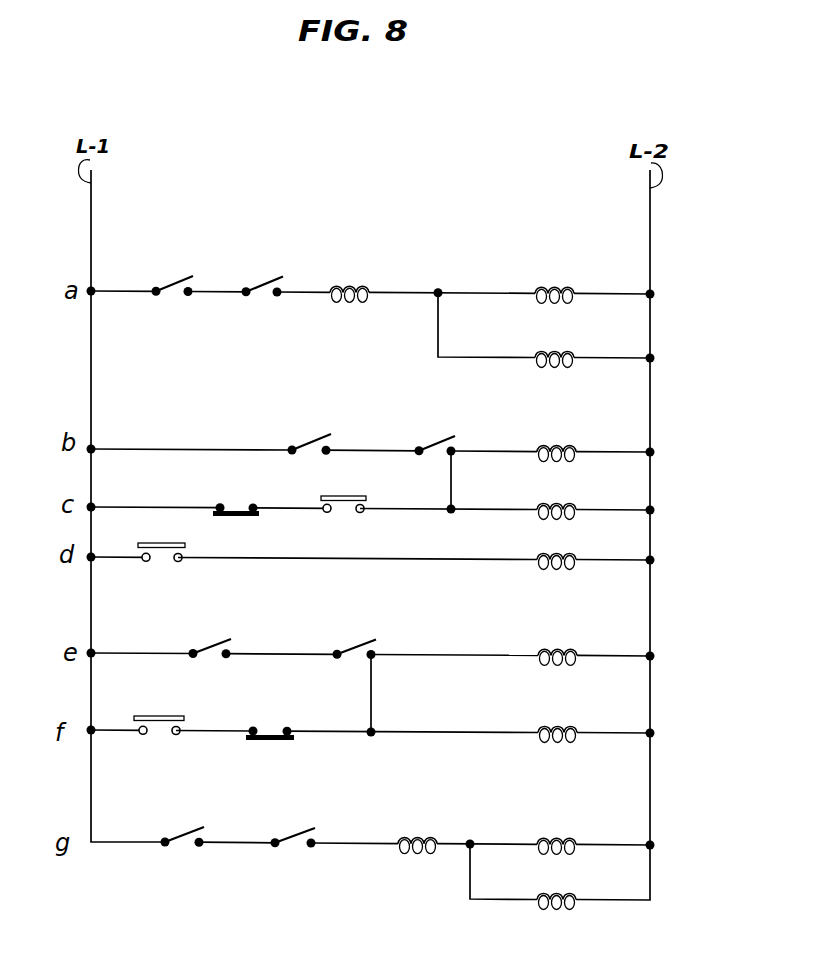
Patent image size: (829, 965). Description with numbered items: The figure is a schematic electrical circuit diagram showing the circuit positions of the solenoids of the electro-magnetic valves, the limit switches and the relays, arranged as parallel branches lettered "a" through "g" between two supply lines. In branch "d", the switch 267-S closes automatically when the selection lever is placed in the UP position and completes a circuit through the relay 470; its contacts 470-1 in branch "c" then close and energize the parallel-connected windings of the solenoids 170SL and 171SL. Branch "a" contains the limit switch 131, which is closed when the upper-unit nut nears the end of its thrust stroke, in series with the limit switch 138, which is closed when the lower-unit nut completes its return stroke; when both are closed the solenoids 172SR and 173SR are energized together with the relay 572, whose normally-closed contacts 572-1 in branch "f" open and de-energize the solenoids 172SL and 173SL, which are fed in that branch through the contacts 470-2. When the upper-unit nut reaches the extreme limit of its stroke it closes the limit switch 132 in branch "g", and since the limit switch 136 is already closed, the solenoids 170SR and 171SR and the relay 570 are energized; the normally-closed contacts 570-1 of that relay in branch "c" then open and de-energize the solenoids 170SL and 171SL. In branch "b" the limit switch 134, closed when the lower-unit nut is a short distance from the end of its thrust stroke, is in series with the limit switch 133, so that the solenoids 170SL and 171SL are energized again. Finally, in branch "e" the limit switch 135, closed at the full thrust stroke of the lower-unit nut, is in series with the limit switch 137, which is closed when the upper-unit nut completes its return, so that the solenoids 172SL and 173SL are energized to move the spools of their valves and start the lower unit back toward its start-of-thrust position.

The limit switch 131 is at (172, 278).
The limit switch 138 is at (261, 278).
The relay 572 is at (347, 287).
The solenoid 172SR is at (558, 288).
The solenoid 173SR is at (555, 352).
The limit switch 133 is at (308, 438).
The limit switch 134 is at (432, 442).
The solenoid 170SL is at (556, 444).
The normally-closed relay contacts 570-1 is at (235, 506).
The relay contacts 470-1 is at (344, 496).
The solenoid 171SL is at (560, 495).
The switch 267-S is at (161, 561).
The relay 470 is at (565, 549).
The limit switch 135 is at (210, 642).
The limit switch 137 is at (355, 646).
The solenoid 172SL is at (560, 650).
The normally open relay contact 470-2 is at (157, 716).
The normally-closed relay contacts 572-1 is at (270, 728).
The solenoid 173SL is at (560, 727).
The limit switch 132 is at (177, 834).
The limit switch 136 is at (295, 832).
The relay 570 is at (422, 836).
The solenoid 170SR is at (562, 837).
The solenoid 171SR is at (563, 884).